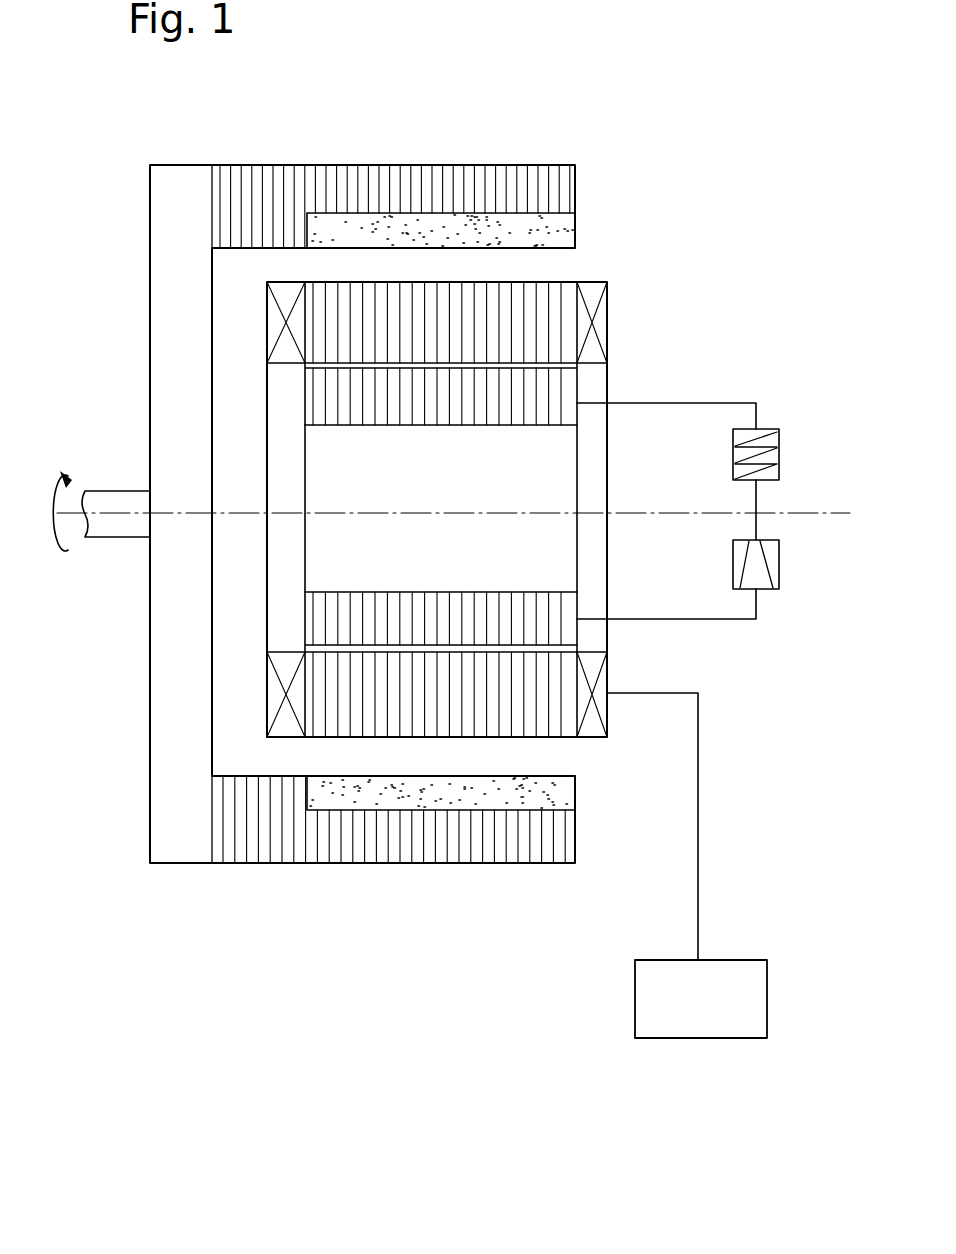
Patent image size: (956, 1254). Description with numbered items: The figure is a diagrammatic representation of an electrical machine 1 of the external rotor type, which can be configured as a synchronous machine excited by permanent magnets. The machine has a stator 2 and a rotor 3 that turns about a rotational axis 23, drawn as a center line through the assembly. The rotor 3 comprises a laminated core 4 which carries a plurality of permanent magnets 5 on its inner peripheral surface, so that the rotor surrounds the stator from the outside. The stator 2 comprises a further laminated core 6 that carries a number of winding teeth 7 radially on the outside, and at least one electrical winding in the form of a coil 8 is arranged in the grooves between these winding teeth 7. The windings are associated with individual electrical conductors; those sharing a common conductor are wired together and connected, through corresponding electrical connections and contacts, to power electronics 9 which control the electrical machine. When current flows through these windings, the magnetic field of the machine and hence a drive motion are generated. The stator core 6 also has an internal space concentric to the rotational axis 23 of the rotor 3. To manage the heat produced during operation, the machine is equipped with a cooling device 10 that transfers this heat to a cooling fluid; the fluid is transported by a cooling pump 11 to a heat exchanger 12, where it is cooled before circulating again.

The electrical machine 1 is at (596, 90).
The stator 2 is at (684, 374).
The rotor 3 is at (186, 890).
The laminated core 4 is at (351, 165).
The permanent magnets 5 is at (580, 235).
The laminated core 6 is at (567, 627).
The winding teeth 7 is at (557, 722).
The coil 8 is at (607, 318).
The power electronics 9 is at (767, 1003).
The cooling device 10 is at (808, 523).
The cooling pump 11 is at (779, 580).
The heat exchanger 12 is at (779, 457).
The rotational axis 23 is at (483, 508).